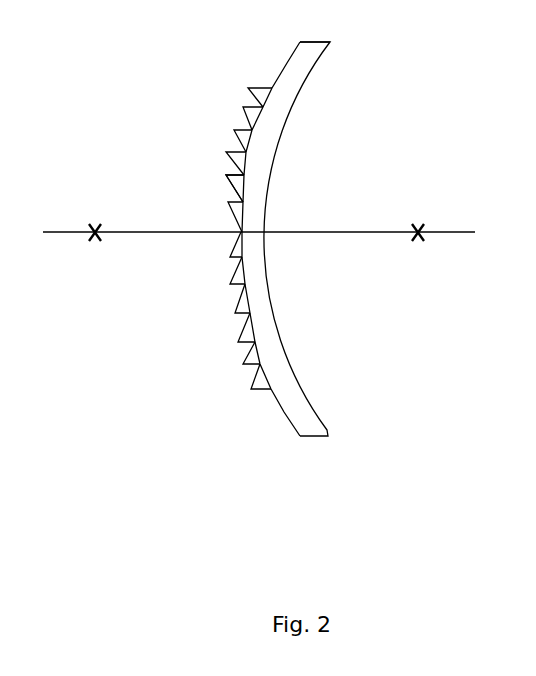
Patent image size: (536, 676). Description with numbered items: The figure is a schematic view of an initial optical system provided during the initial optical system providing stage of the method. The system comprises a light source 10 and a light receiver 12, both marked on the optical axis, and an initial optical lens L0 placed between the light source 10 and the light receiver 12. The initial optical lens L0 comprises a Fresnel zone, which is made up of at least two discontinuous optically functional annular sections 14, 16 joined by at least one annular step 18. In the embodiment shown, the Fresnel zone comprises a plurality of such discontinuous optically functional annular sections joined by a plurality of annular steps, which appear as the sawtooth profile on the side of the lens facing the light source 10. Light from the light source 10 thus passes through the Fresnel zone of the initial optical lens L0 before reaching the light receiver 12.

The light source 10 is at (93, 243).
The light receiver 12 is at (422, 243).
The discontinuous optically functional annular section 14 is at (240, 201).
The discontinuous optically functional annular section 16 is at (243, 176).
The annular step 18 is at (237, 176).
The initial optical lens L0 is at (312, 430).